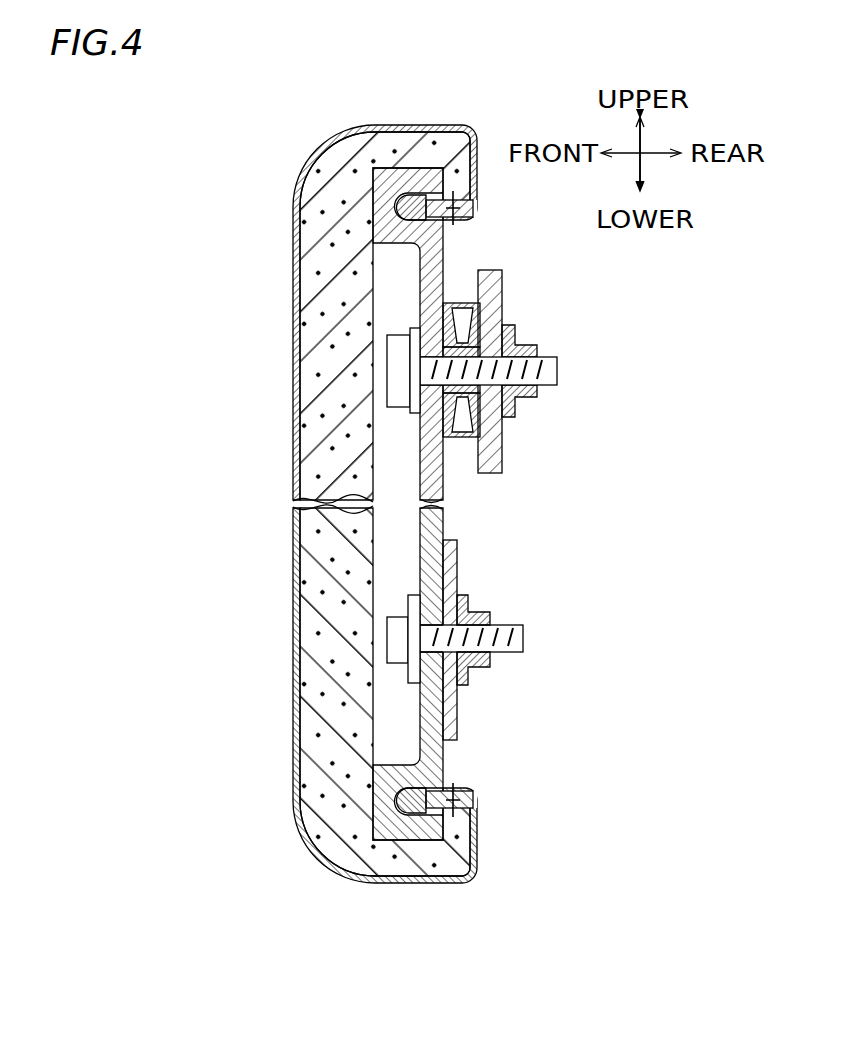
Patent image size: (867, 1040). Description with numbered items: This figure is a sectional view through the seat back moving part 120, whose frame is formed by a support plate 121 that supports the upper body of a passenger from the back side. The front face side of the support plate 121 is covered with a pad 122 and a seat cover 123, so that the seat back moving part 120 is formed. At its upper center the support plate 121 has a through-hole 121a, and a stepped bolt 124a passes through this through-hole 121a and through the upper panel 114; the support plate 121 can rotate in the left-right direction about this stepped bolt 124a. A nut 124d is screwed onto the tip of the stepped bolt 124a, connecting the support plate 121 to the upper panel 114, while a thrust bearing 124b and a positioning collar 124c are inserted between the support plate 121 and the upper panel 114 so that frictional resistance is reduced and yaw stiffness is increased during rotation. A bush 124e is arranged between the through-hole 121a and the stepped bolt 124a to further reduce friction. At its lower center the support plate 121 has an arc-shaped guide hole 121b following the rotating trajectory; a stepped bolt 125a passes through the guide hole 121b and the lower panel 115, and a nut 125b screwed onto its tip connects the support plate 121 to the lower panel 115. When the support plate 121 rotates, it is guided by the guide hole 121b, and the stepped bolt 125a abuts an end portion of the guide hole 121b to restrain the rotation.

The seat back moving part 120 is at (291, 167).
The support plate 121 is at (443, 517).
The through-hole 121a is at (420, 356).
The guide hole 121b is at (462, 668).
The pad 122 is at (328, 393).
The seat cover 123 is at (300, 672).
The upper panel 114 is at (490, 285).
The lower panel 115 is at (452, 708).
The stepped bolt 124a is at (550, 371).
The thrust bearing 124b is at (456, 299).
The positioning collar 124c is at (513, 397).
The nut 124d is at (521, 342).
The bush 124e is at (411, 412).
The stepped bolt 125a is at (520, 640).
The nut 125b is at (478, 614).